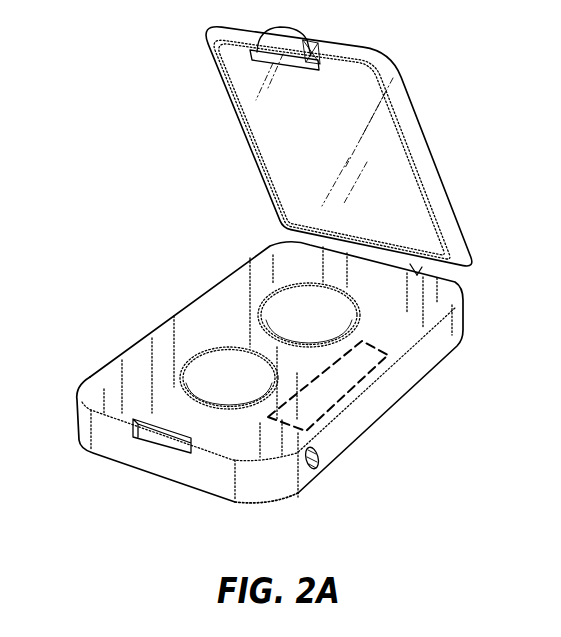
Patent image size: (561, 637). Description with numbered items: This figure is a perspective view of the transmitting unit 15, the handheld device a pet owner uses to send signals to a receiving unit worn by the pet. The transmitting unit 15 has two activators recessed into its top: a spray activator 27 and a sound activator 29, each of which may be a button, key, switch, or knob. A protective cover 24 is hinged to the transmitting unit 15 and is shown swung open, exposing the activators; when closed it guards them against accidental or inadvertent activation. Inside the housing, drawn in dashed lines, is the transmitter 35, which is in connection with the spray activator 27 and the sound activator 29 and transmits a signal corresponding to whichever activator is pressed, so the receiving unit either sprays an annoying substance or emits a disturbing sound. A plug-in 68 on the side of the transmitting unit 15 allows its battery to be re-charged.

The transmitting unit 15 is at (370, 428).
The protective cover 24 is at (423, 133).
The spray activator 27 is at (224, 372).
The sound activator 29 is at (298, 308).
The transmitter 35 is at (378, 346).
The plug-in 68 is at (318, 462).